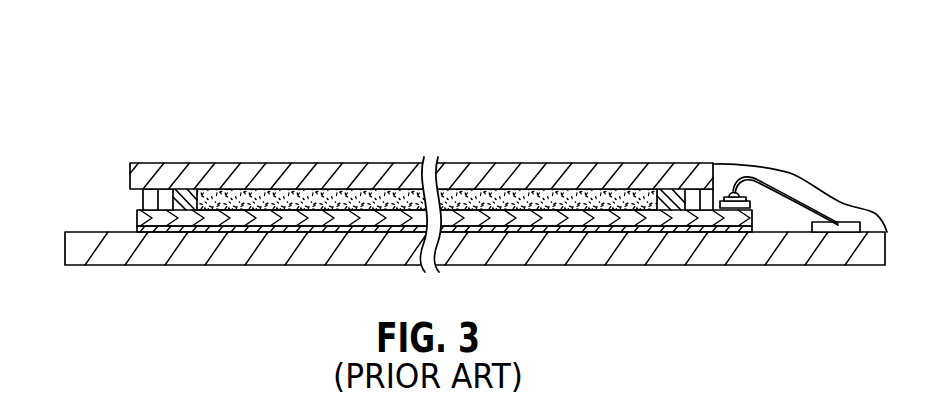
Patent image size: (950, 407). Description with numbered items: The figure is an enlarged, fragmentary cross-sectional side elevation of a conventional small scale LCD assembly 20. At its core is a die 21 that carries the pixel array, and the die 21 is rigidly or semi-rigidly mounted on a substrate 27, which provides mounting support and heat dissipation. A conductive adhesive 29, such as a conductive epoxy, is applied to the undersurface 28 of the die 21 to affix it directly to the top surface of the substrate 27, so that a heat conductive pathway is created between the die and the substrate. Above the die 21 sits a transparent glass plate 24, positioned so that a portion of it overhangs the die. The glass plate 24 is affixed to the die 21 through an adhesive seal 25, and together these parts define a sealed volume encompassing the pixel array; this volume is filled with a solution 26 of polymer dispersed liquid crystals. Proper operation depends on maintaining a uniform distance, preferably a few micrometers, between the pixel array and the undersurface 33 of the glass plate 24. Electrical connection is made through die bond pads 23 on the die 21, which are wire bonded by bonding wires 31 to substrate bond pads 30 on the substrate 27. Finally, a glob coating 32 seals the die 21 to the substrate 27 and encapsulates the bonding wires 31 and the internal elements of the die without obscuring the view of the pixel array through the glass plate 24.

The LCD assembly 20 is at (601, 66).
The die 21 is at (129, 219).
The die bond pads 23 is at (750, 205).
The glass plate 24 is at (139, 155).
The adhesive seal 25 is at (160, 203).
The solution of Polymer Dispersed Liquid Crystals 26 is at (603, 187).
The substrate 27 is at (124, 268).
The undersurface 28 is at (245, 229).
The conductive adhesive 29 is at (136, 230).
The substrate bond pads 30 is at (870, 232).
The bonding wires 31 is at (816, 200).
The glob coating 32 is at (796, 172).
The undersurface of the glass plate 33 is at (137, 197).